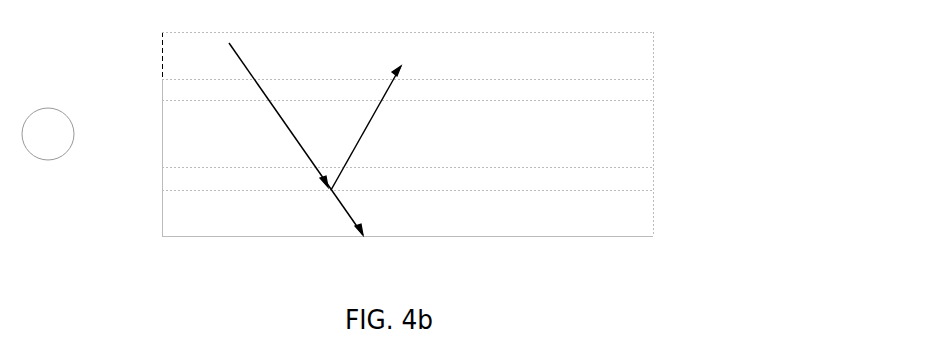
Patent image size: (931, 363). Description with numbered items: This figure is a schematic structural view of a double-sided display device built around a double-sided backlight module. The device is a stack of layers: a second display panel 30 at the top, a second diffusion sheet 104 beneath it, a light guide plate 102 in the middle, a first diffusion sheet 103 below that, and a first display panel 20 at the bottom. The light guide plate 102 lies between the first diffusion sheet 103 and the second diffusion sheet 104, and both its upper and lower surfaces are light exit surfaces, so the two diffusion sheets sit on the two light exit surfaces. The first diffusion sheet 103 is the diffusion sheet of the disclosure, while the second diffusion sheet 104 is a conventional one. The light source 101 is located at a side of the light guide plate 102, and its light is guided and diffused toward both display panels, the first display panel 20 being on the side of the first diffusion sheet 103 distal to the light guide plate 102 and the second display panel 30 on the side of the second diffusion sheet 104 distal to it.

The light source 101 is at (55, 130).
The second display panel 30 is at (578, 56).
The second diffusion sheet 104 is at (578, 90).
The light guide plate 102 is at (578, 134).
The first diffusion sheet 103 is at (578, 180).
The first display panel 20 is at (578, 212).